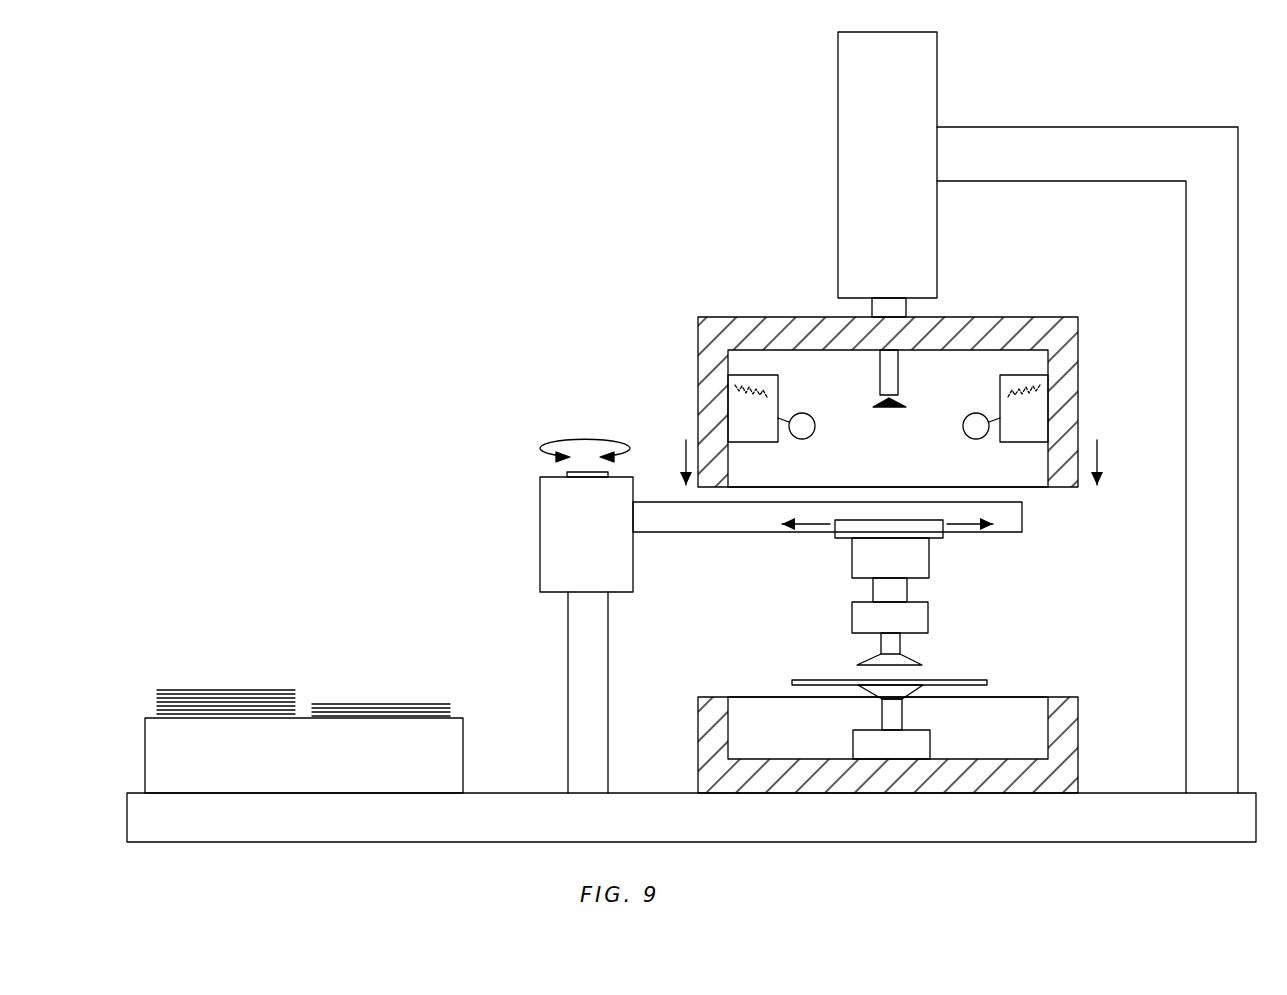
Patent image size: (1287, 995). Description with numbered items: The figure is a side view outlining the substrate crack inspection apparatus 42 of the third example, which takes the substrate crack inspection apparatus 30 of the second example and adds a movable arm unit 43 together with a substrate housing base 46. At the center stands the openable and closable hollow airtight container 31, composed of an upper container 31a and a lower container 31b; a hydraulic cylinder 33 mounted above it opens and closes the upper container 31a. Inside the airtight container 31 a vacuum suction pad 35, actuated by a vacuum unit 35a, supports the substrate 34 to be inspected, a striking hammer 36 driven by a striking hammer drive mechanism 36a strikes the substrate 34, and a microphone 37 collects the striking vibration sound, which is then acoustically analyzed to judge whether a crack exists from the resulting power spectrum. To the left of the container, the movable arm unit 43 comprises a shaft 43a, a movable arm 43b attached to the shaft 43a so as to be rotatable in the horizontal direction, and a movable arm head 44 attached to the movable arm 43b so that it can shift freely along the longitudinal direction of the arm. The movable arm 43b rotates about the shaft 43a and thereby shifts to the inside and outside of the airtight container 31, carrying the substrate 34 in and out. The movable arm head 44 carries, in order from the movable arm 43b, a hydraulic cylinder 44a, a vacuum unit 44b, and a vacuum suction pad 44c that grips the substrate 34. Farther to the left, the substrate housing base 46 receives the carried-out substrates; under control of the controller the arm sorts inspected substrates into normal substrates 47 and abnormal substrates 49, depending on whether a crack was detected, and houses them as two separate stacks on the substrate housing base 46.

The substrate crack inspection apparatus 30 is at (598, 253).
The airtight container 31 is at (973, 298).
The upper container 31a is at (1020, 320).
The lower container 31b is at (1007, 782).
The hydraulic cylinder 33 is at (863, 218).
The substrate 34 is at (788, 672).
The vacuum suction pad 35 is at (890, 710).
The vacuum unit 35a is at (890, 753).
The striking hammer 36 is at (795, 403).
The striking hammer drive mechanism 36a is at (740, 430).
The microphone 37 is at (890, 368).
The substrate crack inspection apparatus 42 is at (315, 338).
The movable arm unit 43 is at (525, 520).
The shaft 43a is at (580, 670).
The movable arm 43b is at (733, 516).
The movable arm head 44 is at (980, 570).
The hydraulic cylinder 44a is at (910, 565).
The vacuum unit 44b is at (872, 618).
The vacuum suction pad 44c is at (890, 648).
The substrate housing base 46 is at (388, 780).
The normal substrates 47 is at (227, 672).
The abnormal substrates 49 is at (378, 687).